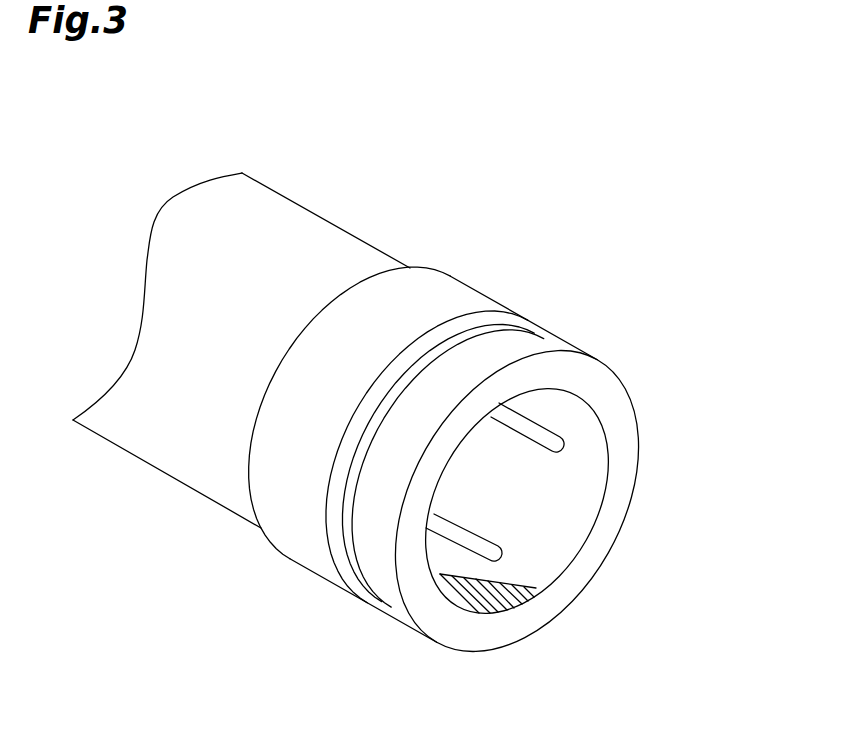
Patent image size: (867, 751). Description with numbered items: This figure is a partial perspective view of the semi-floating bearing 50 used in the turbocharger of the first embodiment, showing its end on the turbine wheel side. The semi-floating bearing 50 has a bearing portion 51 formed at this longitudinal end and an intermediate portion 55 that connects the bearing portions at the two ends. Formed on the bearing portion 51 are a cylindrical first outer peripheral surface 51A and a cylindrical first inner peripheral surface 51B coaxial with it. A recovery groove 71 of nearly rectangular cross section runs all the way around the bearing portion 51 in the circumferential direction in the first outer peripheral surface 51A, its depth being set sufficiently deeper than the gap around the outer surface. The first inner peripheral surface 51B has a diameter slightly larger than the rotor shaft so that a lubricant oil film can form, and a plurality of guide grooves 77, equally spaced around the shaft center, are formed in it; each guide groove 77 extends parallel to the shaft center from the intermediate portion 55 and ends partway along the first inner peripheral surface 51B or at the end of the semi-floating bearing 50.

The semi-floating bearing 50 is at (411, 432).
The bearing portion 51 is at (373, 303).
The first outer peripheral surface 51A is at (443, 290).
The first inner peripheral surface 51B is at (530, 547).
The intermediate portion 55 is at (252, 207).
The recovery groove 71 is at (353, 430).
The guide grooves 77 is at (542, 434).